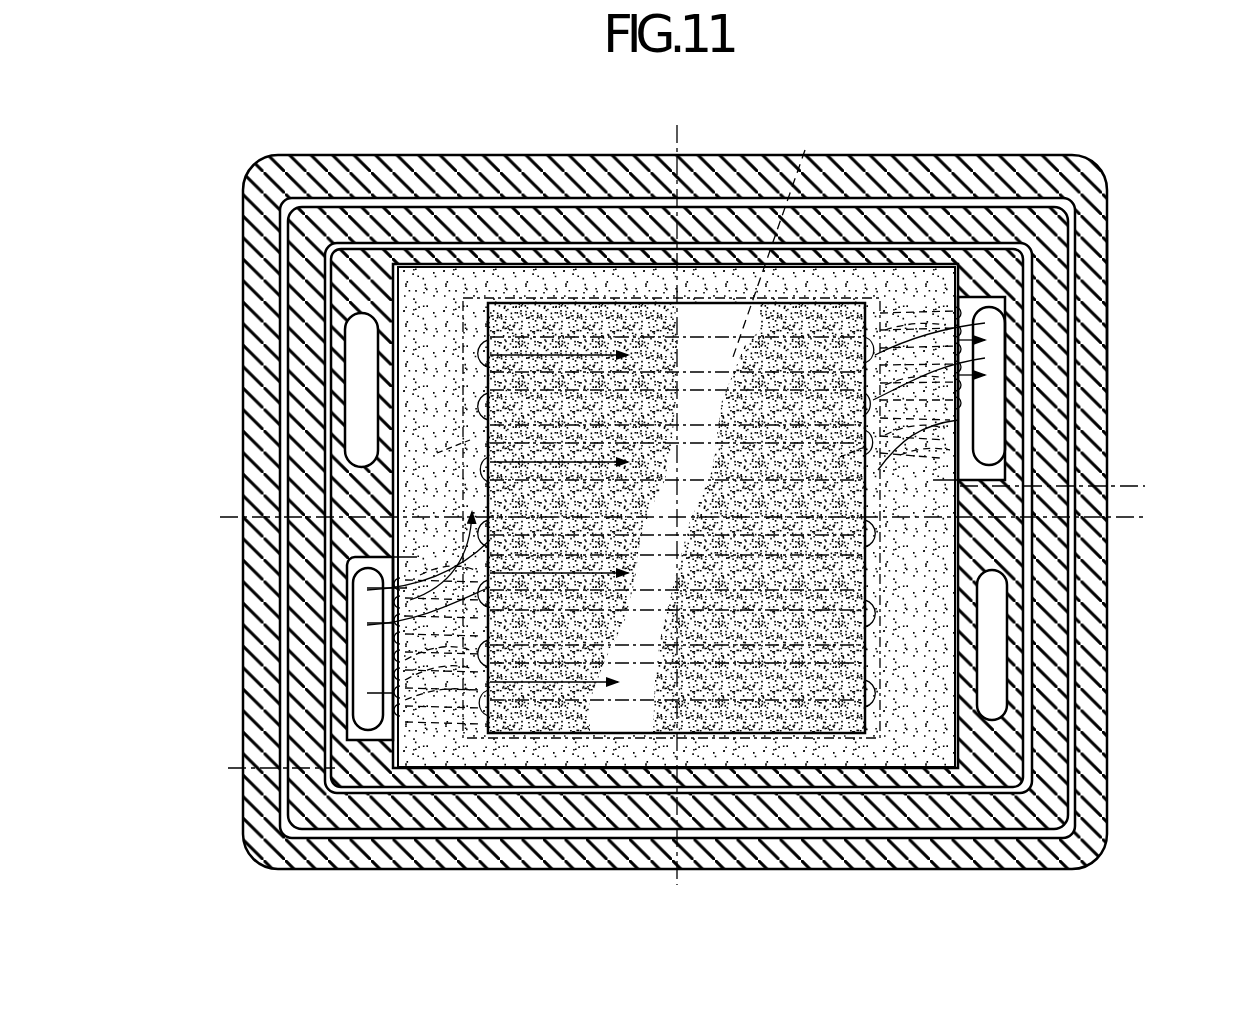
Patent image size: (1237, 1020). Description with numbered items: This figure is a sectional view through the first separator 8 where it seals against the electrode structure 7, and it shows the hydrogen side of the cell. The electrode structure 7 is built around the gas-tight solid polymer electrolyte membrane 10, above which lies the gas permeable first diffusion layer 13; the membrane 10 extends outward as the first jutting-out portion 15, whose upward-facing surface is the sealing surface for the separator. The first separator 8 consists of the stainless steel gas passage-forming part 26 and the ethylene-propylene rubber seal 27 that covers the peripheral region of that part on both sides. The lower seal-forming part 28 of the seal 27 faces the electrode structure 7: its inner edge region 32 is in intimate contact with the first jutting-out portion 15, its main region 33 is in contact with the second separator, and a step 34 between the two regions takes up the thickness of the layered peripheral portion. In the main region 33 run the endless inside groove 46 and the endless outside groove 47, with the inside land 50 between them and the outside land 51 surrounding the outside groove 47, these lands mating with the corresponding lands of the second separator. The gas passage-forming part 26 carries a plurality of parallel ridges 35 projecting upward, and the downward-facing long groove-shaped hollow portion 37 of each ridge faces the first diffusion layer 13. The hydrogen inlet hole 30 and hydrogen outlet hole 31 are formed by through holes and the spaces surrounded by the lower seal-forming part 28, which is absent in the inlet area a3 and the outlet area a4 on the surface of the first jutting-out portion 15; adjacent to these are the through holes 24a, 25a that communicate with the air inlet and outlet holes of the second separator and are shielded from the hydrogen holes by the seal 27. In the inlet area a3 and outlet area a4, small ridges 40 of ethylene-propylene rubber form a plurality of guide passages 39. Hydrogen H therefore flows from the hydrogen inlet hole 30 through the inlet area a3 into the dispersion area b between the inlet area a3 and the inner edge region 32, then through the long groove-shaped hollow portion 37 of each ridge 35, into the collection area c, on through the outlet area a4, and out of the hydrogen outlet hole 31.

The electrode structure 7 is at (441, 341).
The first separator 8 is at (1114, 318).
The solid polymer electrolyte membrane 10 is at (659, 262).
The first diffusion layer 13 is at (712, 423).
The first jutting-out portion 15 is at (430, 753).
The through hole 24a is at (345, 380).
The through hole 25a is at (1000, 655).
The gas passage-forming part 26 is at (382, 733).
The seal 27 is at (1112, 204).
The lower seal-forming part 28 is at (553, 303).
The hydrogen inlet hole 30 is at (347, 673).
The hydrogen outlet hole 31 is at (1005, 413).
The inner edge region 32 is at (493, 413).
The main region 33 is at (285, 465).
The step 34 is at (940, 263).
The ridges 35 is at (721, 325).
The long groove-shaped hollow portion 37 is at (783, 237).
The guide passages 39 is at (868, 347).
The small ridges 40 is at (680, 626).
The endless inside groove 46 is at (616, 242).
The endless outside groove 47 is at (426, 198).
The inside land 50 is at (350, 226).
The outside land 51 is at (375, 172).
The inlet area a3 is at (440, 713).
The outlet area a4 is at (880, 340).
The hydrogen H is at (990, 350).
The dispersion area b is at (440, 455).
The collection area c is at (838, 460).